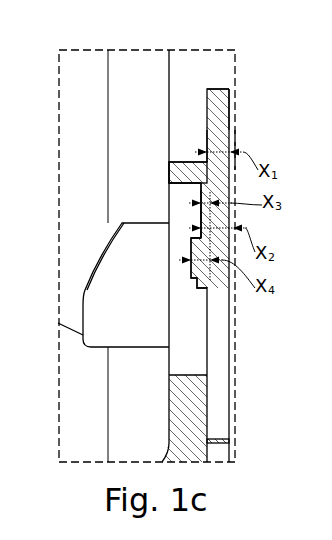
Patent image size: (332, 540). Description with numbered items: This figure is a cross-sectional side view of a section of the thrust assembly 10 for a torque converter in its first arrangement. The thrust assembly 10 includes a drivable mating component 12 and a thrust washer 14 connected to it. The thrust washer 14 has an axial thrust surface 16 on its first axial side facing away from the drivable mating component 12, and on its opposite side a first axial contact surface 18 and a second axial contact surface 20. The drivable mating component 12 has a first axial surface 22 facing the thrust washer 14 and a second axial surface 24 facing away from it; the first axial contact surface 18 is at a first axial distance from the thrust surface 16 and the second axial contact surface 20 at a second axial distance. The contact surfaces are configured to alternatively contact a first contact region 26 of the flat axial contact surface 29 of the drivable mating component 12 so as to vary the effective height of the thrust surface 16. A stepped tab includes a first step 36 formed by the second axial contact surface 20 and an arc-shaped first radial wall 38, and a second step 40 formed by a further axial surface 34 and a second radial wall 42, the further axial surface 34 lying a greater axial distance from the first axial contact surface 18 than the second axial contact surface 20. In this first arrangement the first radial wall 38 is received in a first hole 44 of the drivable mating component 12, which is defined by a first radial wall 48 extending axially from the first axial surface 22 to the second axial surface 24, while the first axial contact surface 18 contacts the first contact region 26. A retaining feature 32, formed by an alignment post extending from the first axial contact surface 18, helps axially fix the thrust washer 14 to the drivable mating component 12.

The thrust assembly 10 is at (247, 335).
The drivable mating component 12 is at (203, 137).
The thrust washer 14 is at (212, 165).
The axial thrust surface 16 is at (233, 149).
The first axial contact surface 18 is at (209, 143).
The second axial contact surface 20 is at (238, 224).
The first axial surface 22 is at (230, 103).
The second axial surface 24 is at (169, 78).
The first contact region 26 is at (229, 89).
The flat axial contact surface 29 is at (225, 113).
The retaining feature 32 is at (113, 268).
The further axial surface 34 is at (210, 290).
The first step 36 is at (197, 158).
The first radial wall 38 is at (186, 169).
The second step 40 is at (177, 231).
The second radial wall 42 is at (205, 250).
The first hole 44 is at (183, 417).
The first radial wall 48 is at (190, 376).